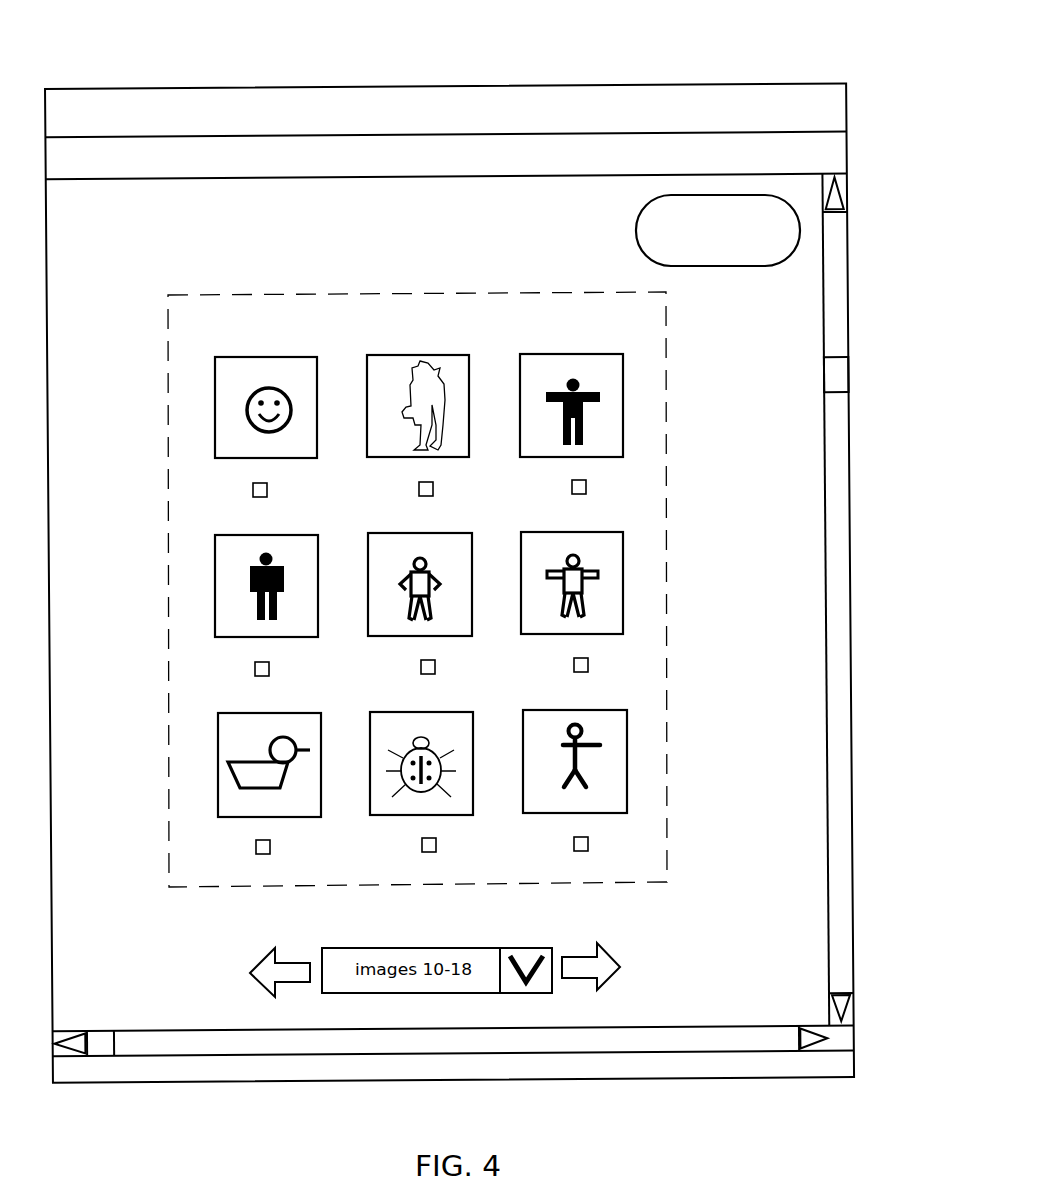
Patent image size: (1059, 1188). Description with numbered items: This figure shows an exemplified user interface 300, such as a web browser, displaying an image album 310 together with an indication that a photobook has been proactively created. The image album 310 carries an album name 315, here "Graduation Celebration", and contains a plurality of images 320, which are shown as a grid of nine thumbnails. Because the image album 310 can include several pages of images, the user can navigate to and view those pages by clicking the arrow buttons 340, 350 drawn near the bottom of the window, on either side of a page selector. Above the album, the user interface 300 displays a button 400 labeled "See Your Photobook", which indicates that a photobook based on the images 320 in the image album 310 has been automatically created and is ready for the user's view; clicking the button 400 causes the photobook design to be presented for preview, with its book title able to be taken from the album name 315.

The user interface 300 is at (742, 74).
The image album 310 is at (532, 280).
The album name 315 is at (404, 242).
The images 320 is at (212, 730).
The arrow button 340 is at (618, 946).
The arrow button 350 is at (252, 954).
The button 400 is at (727, 282).